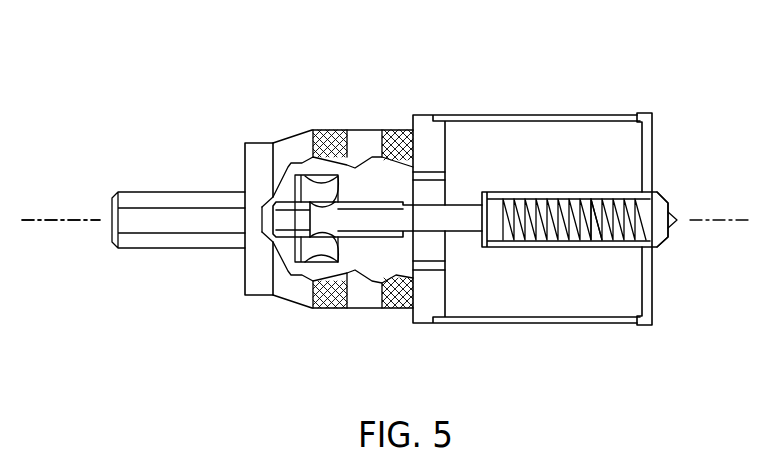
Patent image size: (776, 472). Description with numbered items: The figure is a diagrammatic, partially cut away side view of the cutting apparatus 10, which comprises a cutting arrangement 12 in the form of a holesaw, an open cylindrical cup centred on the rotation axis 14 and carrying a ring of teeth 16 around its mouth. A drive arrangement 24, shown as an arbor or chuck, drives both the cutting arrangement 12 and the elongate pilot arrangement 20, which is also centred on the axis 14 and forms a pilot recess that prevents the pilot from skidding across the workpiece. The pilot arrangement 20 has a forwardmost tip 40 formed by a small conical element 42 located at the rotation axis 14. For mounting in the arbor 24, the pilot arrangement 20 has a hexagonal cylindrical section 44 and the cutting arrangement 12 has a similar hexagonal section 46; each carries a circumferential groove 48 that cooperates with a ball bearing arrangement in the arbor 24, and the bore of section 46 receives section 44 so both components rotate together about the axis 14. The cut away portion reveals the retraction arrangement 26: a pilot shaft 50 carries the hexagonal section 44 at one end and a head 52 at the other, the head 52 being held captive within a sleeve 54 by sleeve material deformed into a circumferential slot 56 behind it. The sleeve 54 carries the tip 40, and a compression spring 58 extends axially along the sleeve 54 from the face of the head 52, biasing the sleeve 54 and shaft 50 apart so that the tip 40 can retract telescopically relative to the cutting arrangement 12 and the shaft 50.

The cutting apparatus 10 is at (236, 63).
The cutting arrangement 12 is at (543, 114).
The rotation axis 14 is at (57, 221).
The teeth 16 is at (652, 323).
The pilot arrangement 20 is at (528, 165).
The drive arrangement 24 is at (253, 297).
The retraction arrangement 26 is at (529, 284).
The forwardmost tip 40 is at (670, 259).
The conical element 42 is at (672, 209).
The hexagonal cylindrical section 44 is at (355, 238).
The hexagonal section 46 is at (336, 238).
The circumferential groove 48 is at (318, 240).
The pilot shaft 50 is at (455, 231).
The head 52 is at (488, 232).
The sleeve 54 is at (600, 249).
The circumferential slot 56 is at (458, 205).
The compression spring 58 is at (595, 213).